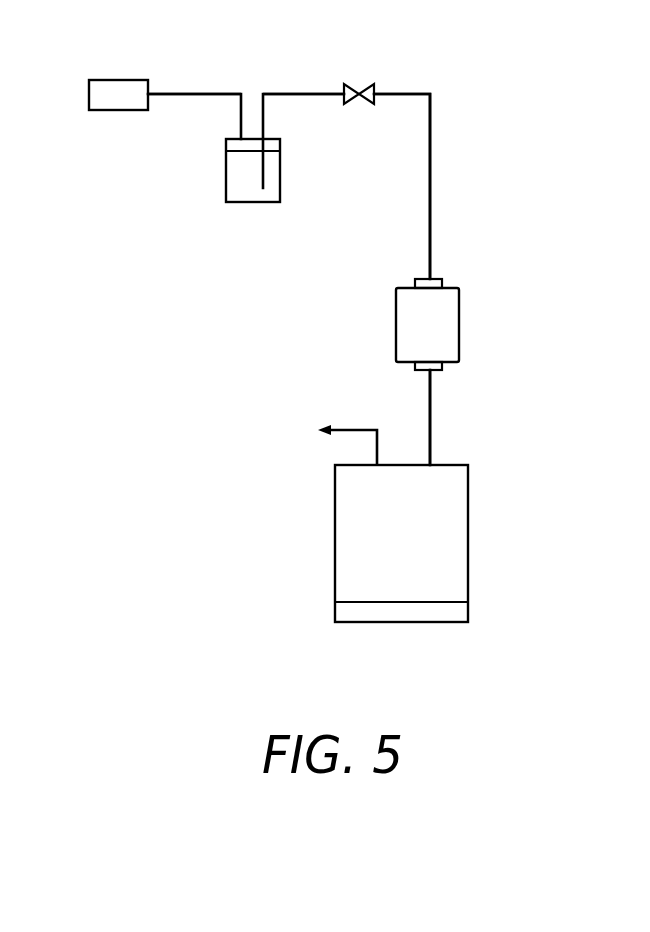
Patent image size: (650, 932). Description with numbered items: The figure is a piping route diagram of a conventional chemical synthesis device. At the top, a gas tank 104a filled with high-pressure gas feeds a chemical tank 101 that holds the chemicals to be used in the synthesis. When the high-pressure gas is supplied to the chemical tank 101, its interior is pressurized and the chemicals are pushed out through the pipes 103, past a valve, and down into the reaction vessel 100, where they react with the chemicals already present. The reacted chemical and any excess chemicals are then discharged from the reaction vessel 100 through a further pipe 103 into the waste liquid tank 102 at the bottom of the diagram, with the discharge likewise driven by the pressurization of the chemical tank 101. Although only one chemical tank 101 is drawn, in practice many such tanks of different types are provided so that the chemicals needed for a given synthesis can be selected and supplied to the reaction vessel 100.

The gas tank 104a is at (110, 79).
The chemical tank 101 is at (226, 176).
The pipes 103 is at (392, 93).
The reaction vessel 100 is at (396, 321).
The waste liquid tank 102 is at (335, 553).